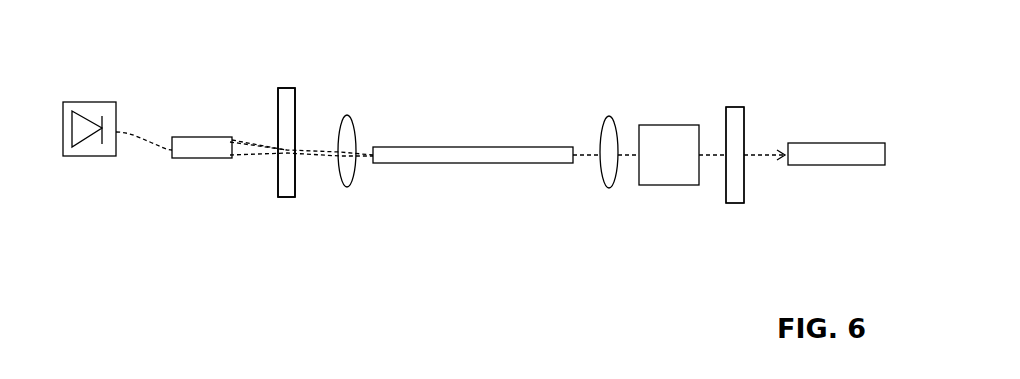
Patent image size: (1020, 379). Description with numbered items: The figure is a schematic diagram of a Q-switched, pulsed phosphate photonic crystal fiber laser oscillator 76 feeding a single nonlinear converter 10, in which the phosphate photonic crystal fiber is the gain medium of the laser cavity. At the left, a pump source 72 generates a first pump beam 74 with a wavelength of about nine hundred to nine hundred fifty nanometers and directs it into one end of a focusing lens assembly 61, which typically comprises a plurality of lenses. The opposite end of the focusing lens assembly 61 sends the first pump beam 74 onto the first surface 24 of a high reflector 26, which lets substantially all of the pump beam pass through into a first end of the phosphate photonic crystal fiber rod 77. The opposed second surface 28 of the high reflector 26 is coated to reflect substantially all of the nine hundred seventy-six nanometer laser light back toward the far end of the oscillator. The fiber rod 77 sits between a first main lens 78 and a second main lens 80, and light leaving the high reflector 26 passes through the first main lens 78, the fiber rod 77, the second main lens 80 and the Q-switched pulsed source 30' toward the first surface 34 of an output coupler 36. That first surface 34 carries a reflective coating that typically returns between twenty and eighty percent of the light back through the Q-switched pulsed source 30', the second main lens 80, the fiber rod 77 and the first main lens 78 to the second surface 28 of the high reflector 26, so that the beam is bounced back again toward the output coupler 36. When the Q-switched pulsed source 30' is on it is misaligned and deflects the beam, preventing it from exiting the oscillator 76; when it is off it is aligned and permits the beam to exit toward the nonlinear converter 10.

The pump source 72 is at (88, 156).
The focusing lens assembly 61 is at (202, 138).
The first pump beam 74 is at (258, 147).
The first surface of the high reflector 24 is at (277, 177).
The high reflector 26 is at (288, 198).
The second surface of the high reflector 28 is at (295, 180).
The first main lens 78 is at (346, 116).
The phosphate photonic crystal fiber rod 77 is at (477, 163).
The second main lens 80 is at (607, 118).
The Q-switched pulsed source 30' is at (669, 125).
The first surface of the output coupler 34 is at (725, 192).
The output coupler 36 is at (733, 205).
The nonlinear converter 10 is at (805, 165).
The PPCF laser oscillator 76 is at (758, 88).